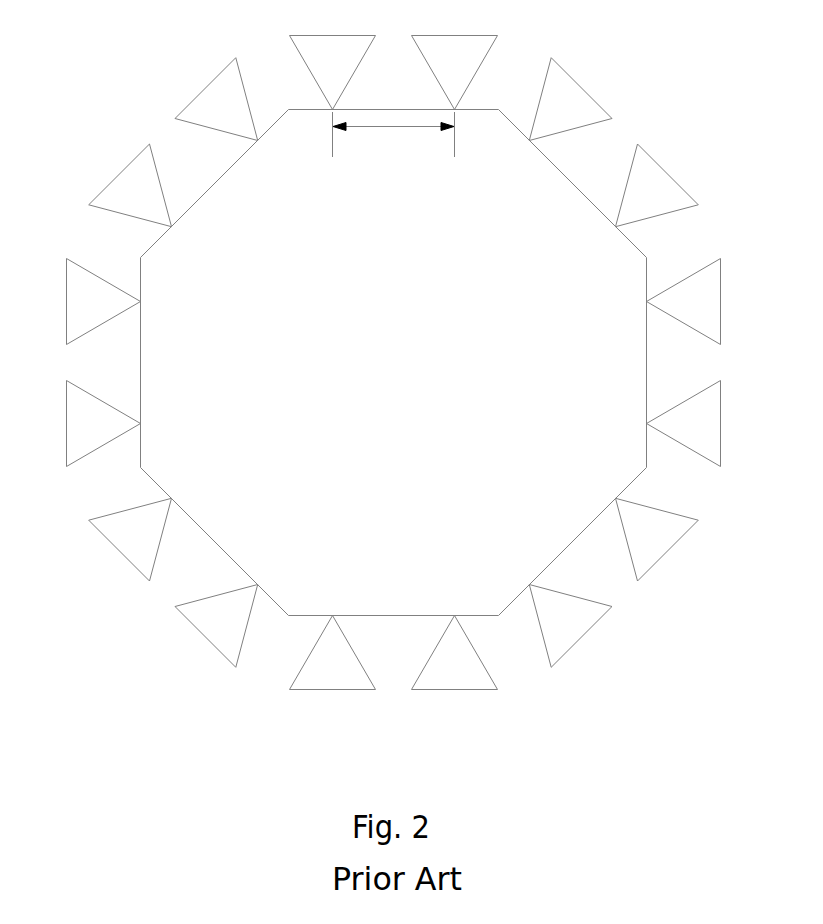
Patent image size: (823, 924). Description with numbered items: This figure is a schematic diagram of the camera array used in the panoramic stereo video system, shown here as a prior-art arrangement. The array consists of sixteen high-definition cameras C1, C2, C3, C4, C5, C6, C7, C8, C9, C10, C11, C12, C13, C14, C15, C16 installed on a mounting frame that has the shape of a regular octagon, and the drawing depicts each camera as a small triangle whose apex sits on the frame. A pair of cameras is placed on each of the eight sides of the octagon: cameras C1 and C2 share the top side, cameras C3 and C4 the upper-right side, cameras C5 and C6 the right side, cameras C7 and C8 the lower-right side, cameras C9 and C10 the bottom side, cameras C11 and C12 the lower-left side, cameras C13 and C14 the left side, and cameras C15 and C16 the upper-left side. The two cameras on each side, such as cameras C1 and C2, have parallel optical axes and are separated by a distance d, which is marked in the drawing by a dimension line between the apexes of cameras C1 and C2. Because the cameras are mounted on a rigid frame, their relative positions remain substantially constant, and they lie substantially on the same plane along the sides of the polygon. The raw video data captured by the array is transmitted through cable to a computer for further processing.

The high-definition camera C1 is at (333, 60).
The high-definition camera C2 is at (455, 60).
The high-definition camera C3 is at (571, 99).
The high-definition camera C4 is at (662, 185).
The high-definition camera C5 is at (706, 302).
The high-definition camera C6 is at (706, 424).
The high-definition camera C7 is at (662, 541).
The high-definition camera C8 is at (576, 627).
The high-definition camera C9 is at (455, 666).
The high-definition camera C10 is at (333, 666).
The high-definition camera C11 is at (208, 626).
The high-definition camera C12 is at (118, 540).
The high-definition camera C13 is at (77, 424).
The high-definition camera C14 is at (77, 302).
The high-definition camera C15 is at (118, 185).
The high-definition camera C16 is at (203, 99).
The distance d is at (394, 134).